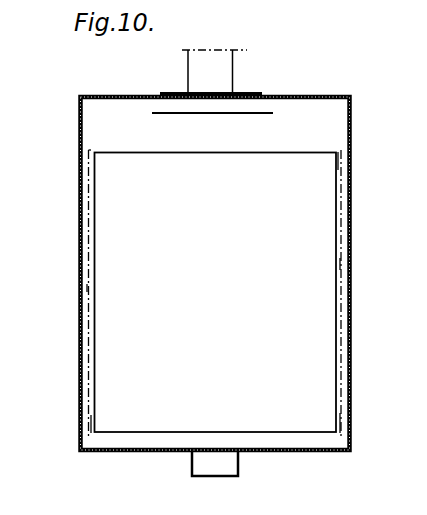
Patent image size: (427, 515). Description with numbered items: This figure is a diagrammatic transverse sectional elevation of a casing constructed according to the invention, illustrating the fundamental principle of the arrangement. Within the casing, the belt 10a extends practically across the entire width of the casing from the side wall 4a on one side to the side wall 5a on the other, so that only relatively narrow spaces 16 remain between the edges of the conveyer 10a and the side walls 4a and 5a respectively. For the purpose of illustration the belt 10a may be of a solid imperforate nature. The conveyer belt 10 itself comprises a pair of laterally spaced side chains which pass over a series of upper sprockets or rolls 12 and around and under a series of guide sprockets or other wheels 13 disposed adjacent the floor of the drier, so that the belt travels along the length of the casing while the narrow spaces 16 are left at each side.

The side wall 4a is at (150, 103).
The side wall 5a is at (348, 171).
The conveyer belt 10 is at (90, 254).
The belt 10a is at (318, 327).
The upper sprockets or rolls 12 is at (88, 158).
The guide sprockets or other wheels 13 is at (92, 423).
The narrow spaces 16 is at (91, 290).